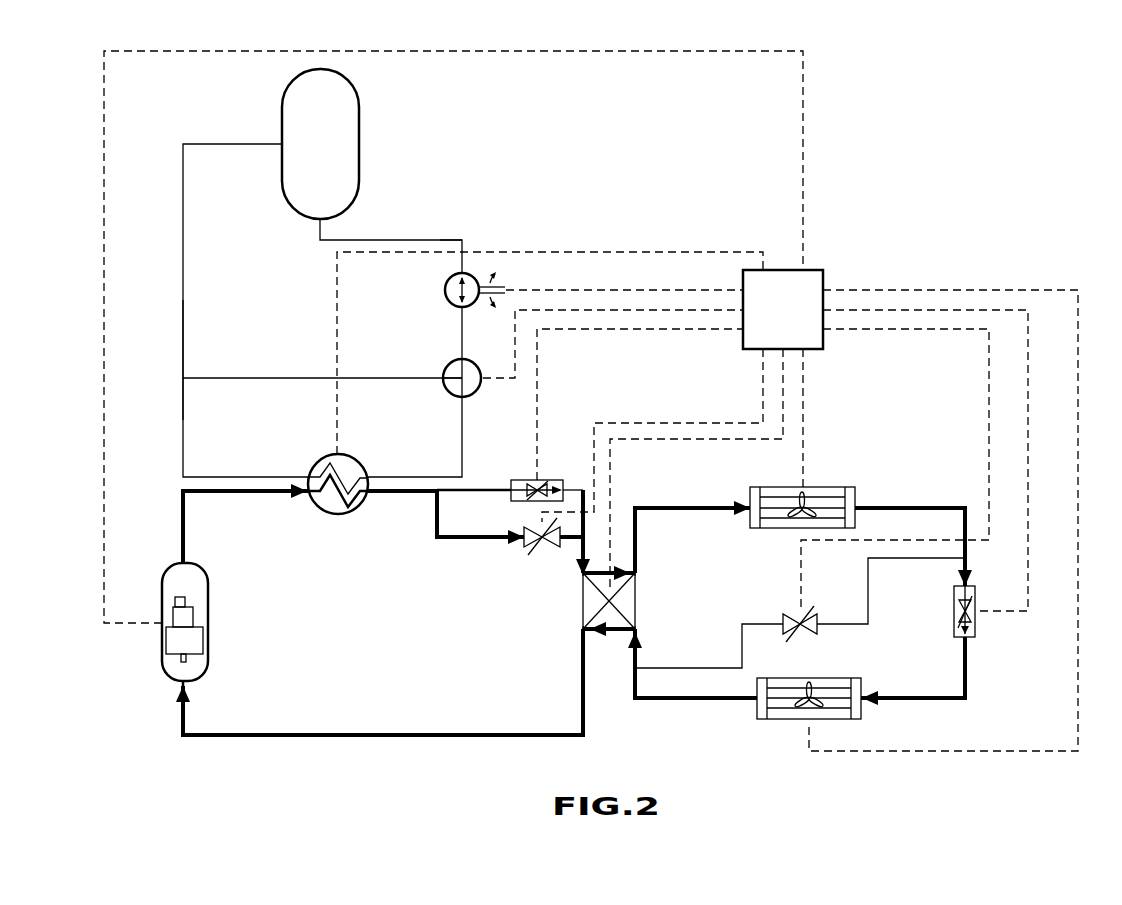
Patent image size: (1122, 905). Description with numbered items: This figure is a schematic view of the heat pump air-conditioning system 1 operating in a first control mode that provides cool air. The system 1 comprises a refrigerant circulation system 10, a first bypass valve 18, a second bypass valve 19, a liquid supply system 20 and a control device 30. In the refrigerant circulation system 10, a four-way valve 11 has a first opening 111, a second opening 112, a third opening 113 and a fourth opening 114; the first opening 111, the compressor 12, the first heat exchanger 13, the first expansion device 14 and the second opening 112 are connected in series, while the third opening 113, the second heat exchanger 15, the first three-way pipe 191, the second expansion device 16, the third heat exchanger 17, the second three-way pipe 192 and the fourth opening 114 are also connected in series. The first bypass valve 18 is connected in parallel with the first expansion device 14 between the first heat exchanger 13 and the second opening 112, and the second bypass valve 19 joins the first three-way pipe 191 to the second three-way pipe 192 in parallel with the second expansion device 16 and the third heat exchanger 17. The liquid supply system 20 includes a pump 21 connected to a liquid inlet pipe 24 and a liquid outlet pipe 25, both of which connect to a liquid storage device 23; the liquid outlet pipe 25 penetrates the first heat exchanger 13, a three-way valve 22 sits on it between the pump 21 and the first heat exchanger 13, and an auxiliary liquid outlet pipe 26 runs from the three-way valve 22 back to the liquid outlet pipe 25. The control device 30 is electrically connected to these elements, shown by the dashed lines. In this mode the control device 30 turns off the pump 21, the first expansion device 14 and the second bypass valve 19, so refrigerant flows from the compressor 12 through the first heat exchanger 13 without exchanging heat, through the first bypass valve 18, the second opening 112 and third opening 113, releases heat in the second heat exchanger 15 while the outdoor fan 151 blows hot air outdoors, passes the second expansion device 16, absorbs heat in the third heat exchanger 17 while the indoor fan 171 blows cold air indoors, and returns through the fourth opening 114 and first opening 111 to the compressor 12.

The heat pump air-conditioning system 1 is at (1121, 49).
The refrigerant circulation system 10 is at (181, 743).
The four-way valve 11 is at (639, 599).
The first opening 111 is at (580, 630).
The second opening 112 is at (580, 576).
The third opening 113 is at (640, 575).
The fourth opening 114 is at (640, 630).
The compressor 12 is at (208, 620).
The first heat exchanger 13 is at (337, 514).
The first expansion device 14 is at (522, 480).
The second heat exchanger 15 is at (777, 530).
The outdoor fan 151 is at (808, 494).
The second expansion device 16 is at (975, 627).
The third heat exchanger 17 is at (783, 722).
The indoor fan 171 is at (812, 684).
The first bypass valve 18 is at (521, 531).
The second bypass valve 19 is at (786, 617).
The first three-way pipe 191 is at (975, 553).
The second three-way pipe 192 is at (631, 674).
The liquid supply system 20 is at (414, 220).
The pump 21 is at (445, 292).
The three-way valve 22 is at (450, 362).
The liquid storage device 23 is at (359, 148).
The liquid inlet pipe 24 is at (462, 240).
The liquid outlet pipe 25 is at (183, 420).
The auxiliary liquid outlet pipe 26 is at (268, 378).
The control device 30 is at (823, 270).